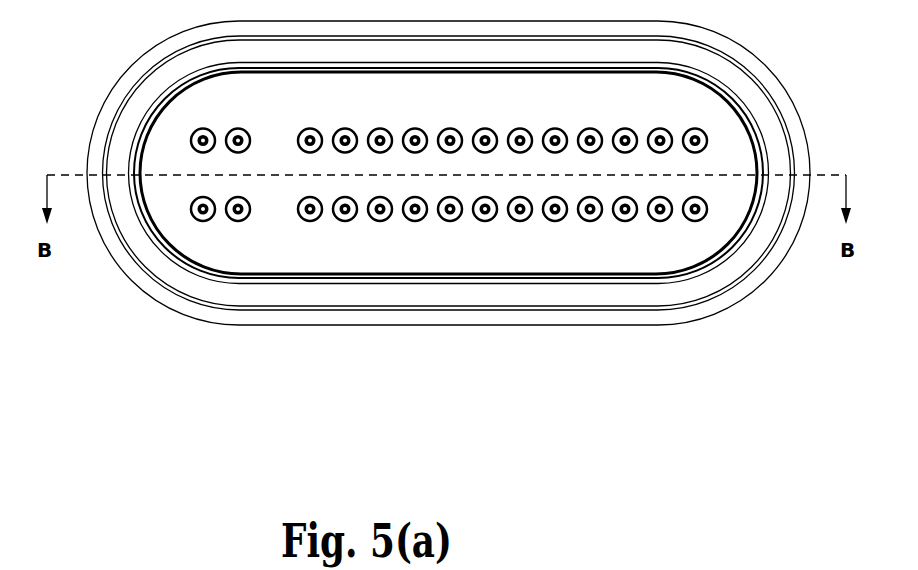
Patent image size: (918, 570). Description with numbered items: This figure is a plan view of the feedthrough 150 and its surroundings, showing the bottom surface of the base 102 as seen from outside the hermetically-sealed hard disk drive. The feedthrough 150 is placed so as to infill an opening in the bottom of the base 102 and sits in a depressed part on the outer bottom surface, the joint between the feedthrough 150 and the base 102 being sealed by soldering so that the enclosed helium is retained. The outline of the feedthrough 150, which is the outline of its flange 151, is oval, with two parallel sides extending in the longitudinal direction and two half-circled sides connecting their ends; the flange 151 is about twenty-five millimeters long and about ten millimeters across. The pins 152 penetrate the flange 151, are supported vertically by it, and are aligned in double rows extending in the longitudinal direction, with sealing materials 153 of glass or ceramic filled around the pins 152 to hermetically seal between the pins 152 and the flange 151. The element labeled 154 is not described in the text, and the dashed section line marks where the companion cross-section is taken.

The base 102 is at (780, 385).
The feedthrough 150 is at (350, 245).
The flange 151 is at (272, 277).
The pins 152 is at (413, 216).
The sealing materials 153 is at (486, 216).
The inner liner 154 is at (195, 272).